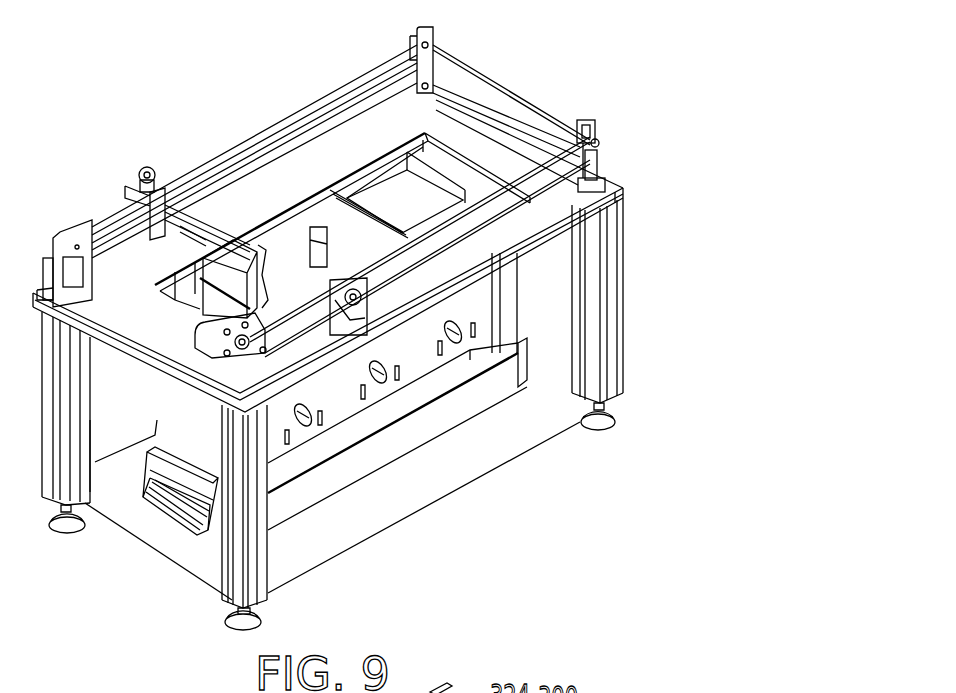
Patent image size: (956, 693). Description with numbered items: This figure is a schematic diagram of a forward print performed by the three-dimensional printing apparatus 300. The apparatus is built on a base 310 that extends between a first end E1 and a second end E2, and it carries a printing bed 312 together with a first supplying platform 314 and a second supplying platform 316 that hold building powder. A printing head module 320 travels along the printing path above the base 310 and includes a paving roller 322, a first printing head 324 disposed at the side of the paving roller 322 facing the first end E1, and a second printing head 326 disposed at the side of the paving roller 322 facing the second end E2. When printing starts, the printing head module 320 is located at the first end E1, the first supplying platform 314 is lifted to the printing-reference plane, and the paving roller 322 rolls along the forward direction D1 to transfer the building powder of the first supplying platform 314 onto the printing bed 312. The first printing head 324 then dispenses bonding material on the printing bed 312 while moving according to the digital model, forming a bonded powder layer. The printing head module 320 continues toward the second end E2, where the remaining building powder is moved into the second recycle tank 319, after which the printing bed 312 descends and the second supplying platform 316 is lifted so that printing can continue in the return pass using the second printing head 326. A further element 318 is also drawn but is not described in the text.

The 3-D printing apparatus 300 is at (647, 578).
The base 310 is at (568, 222).
The printing bed 312 is at (320, 193).
The first supplying platform 314 is at (147, 173).
The second supplying platform 316 is at (382, 173).
The first fixing plate 318 is at (137, 247).
The second recycle tank 319 is at (417, 148).
The printing head module 320 is at (147, 100).
The paving roller 322 is at (233, 203).
The first printing head 324 is at (213, 227).
The second printing head 326 is at (293, 227).
The forward direction D1 is at (300, 32).
The first end E1 is at (137, 353).
The second end E2 is at (532, 135).